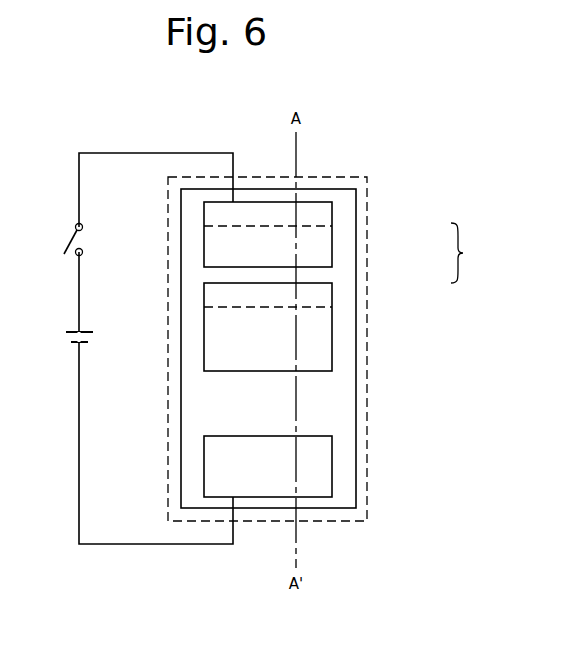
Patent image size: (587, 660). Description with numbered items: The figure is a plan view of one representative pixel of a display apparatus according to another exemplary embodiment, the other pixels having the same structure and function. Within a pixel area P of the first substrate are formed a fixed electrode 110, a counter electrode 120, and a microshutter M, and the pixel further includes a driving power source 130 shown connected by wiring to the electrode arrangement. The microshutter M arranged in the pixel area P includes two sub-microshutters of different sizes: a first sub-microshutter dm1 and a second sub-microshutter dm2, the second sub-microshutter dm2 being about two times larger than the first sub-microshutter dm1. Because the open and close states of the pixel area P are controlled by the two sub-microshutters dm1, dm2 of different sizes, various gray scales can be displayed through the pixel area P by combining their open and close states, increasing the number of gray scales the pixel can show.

The pixel area P is at (367, 357).
The fixed electrode 110 is at (356, 403).
The counter electrode 120 is at (332, 463).
The driving power source 130 is at (145, 545).
The first sub-microshutter dm1 is at (332, 213).
The second sub-microshutter dm2 is at (332, 295).
The microshutter M is at (465, 253).